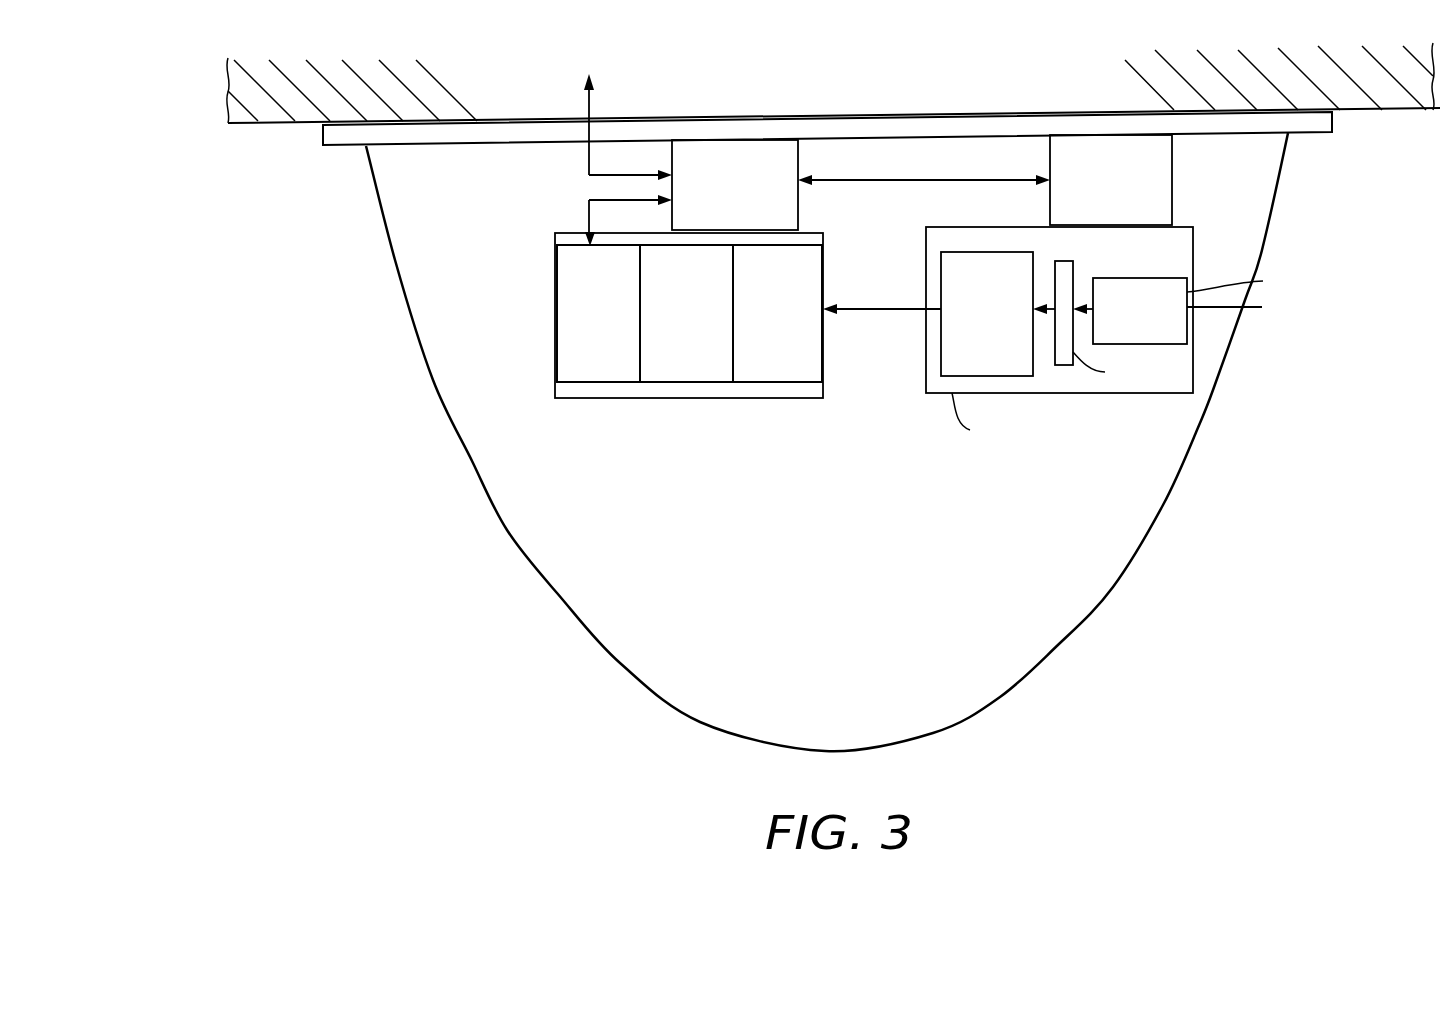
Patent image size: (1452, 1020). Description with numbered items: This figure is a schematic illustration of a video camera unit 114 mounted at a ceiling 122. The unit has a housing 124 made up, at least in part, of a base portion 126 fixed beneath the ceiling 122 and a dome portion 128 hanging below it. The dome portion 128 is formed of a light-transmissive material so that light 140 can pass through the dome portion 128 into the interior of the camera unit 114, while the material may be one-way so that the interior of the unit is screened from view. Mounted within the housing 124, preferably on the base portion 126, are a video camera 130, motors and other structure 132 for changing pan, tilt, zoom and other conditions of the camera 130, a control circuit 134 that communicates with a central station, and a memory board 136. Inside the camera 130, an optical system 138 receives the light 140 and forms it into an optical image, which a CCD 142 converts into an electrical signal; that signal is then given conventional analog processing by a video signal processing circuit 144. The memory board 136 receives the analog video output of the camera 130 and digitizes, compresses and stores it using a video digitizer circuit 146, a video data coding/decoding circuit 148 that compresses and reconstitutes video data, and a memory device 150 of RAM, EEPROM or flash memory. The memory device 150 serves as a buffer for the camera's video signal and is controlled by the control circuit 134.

The camera unit 114 is at (322, 458).
The ceiling 122 is at (1012, 58).
The housing 124 is at (1306, 178).
The base portion 126 is at (1332, 122).
The dome portion 128 is at (1163, 505).
The video camera 130 is at (1090, 393).
The motors and other structure 132 is at (1172, 190).
The control circuit 134 is at (798, 215).
The memory board 136 is at (683, 341).
The optical system 138 is at (1112, 278).
The light 140 is at (1208, 308).
The CCD 142 is at (1056, 259).
The video signal processing circuit 144 is at (940, 350).
The video digitizer circuit 146 is at (823, 355).
The video data coding/decoding circuit 148 is at (668, 362).
The memory device 150 is at (555, 298).